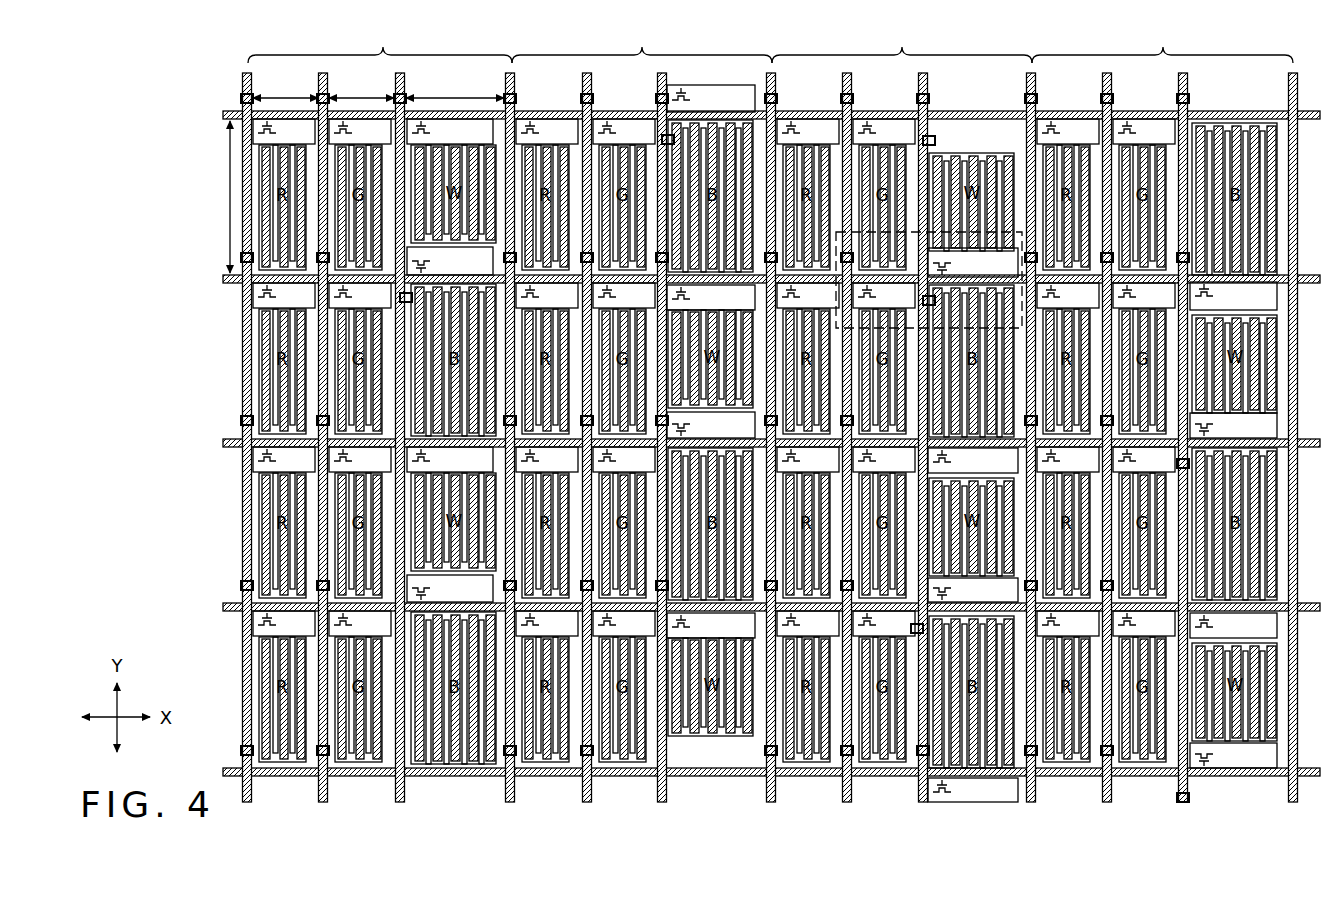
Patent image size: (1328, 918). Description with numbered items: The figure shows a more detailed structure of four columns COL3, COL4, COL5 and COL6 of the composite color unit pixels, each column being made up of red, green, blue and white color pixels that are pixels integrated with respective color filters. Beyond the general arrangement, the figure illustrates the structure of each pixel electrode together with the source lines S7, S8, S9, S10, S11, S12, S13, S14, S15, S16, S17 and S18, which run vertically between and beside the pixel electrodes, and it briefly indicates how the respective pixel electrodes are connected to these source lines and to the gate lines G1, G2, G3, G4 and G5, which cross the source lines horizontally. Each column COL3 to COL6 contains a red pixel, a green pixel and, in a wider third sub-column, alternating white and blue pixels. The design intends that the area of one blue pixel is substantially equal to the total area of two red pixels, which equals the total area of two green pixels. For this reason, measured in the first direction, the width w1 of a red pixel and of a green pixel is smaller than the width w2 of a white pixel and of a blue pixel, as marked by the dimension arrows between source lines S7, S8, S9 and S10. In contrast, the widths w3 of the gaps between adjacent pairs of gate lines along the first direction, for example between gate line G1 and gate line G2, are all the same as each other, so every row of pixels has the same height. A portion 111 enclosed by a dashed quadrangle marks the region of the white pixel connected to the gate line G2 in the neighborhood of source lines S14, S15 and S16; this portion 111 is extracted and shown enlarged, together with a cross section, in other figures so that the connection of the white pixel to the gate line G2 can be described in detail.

The source line S7 is at (244, 76).
The source line S8 is at (330, 73).
The source line S9 is at (406, 73).
The source line S10 is at (516, 80).
The source line S11 is at (593, 80).
The source line S12 is at (668, 73).
The source line S13 is at (777, 80).
The source line S14 is at (853, 80).
The source line S15 is at (929, 80).
The source line S16 is at (1037, 80).
The source line S17 is at (1113, 80).
The source line S18 is at (1189, 80).
The gate line G1 is at (755, 115).
The gate line G2 is at (755, 279).
The gate line G3 is at (755, 443).
The gate line G4 is at (755, 607).
The gate line G5 is at (755, 772).
The column of composite color unit pixels COL3 is at (380, 43).
The column of composite color unit pixels COL4 is at (642, 43).
The column of composite color unit pixels COL5 is at (902, 43).
The column of composite color unit pixels COL6 is at (1162, 43).
The width of red pixel and green pixel w1 is at (323, 87).
The width of white pixel and blue pixel w2 is at (455, 87).
The width of gap between adjacent gate lines w3 is at (210, 197).
The portion enclosed by a quadrangle 111 is at (913, 226).